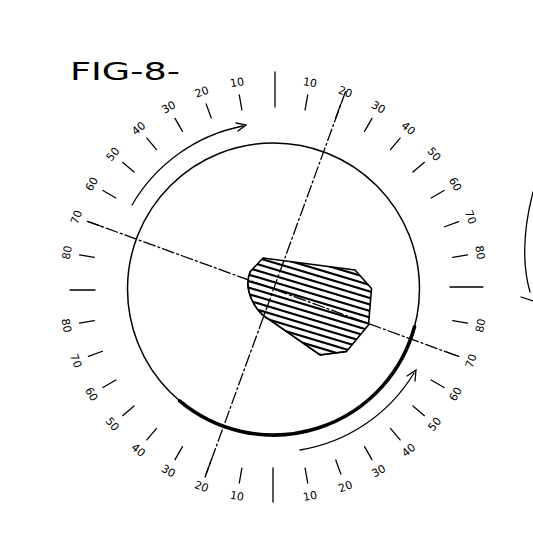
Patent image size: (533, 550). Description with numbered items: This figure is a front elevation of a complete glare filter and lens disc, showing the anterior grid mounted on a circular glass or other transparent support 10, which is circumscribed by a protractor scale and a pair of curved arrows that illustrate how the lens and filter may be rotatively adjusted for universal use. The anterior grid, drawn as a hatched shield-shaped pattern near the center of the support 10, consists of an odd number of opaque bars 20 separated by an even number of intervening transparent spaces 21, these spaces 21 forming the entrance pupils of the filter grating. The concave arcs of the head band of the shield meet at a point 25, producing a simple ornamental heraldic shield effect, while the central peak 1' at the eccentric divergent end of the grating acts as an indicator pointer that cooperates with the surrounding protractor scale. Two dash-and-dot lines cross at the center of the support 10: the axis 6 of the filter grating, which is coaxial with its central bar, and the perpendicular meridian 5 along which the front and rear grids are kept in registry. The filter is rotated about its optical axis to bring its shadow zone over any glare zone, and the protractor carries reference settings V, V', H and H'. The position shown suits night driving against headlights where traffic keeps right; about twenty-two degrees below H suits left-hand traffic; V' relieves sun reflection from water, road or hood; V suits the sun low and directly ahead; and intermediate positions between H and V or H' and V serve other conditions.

The transparent support 10 is at (378, 186).
The meridian 5— 5 is at (312, 187).
The axis 6— 6 is at (184, 256).
The central peak 1' is at (315, 304).
The point of shield 25 is at (248, 280).
The bars 20 is at (315, 347).
The transparent spaces 21 is at (335, 349).
The V setting V is at (276, 77).
The V' setting V' is at (272, 501).
The H setting H is at (61, 290).
The H' setting H' is at (480, 288).